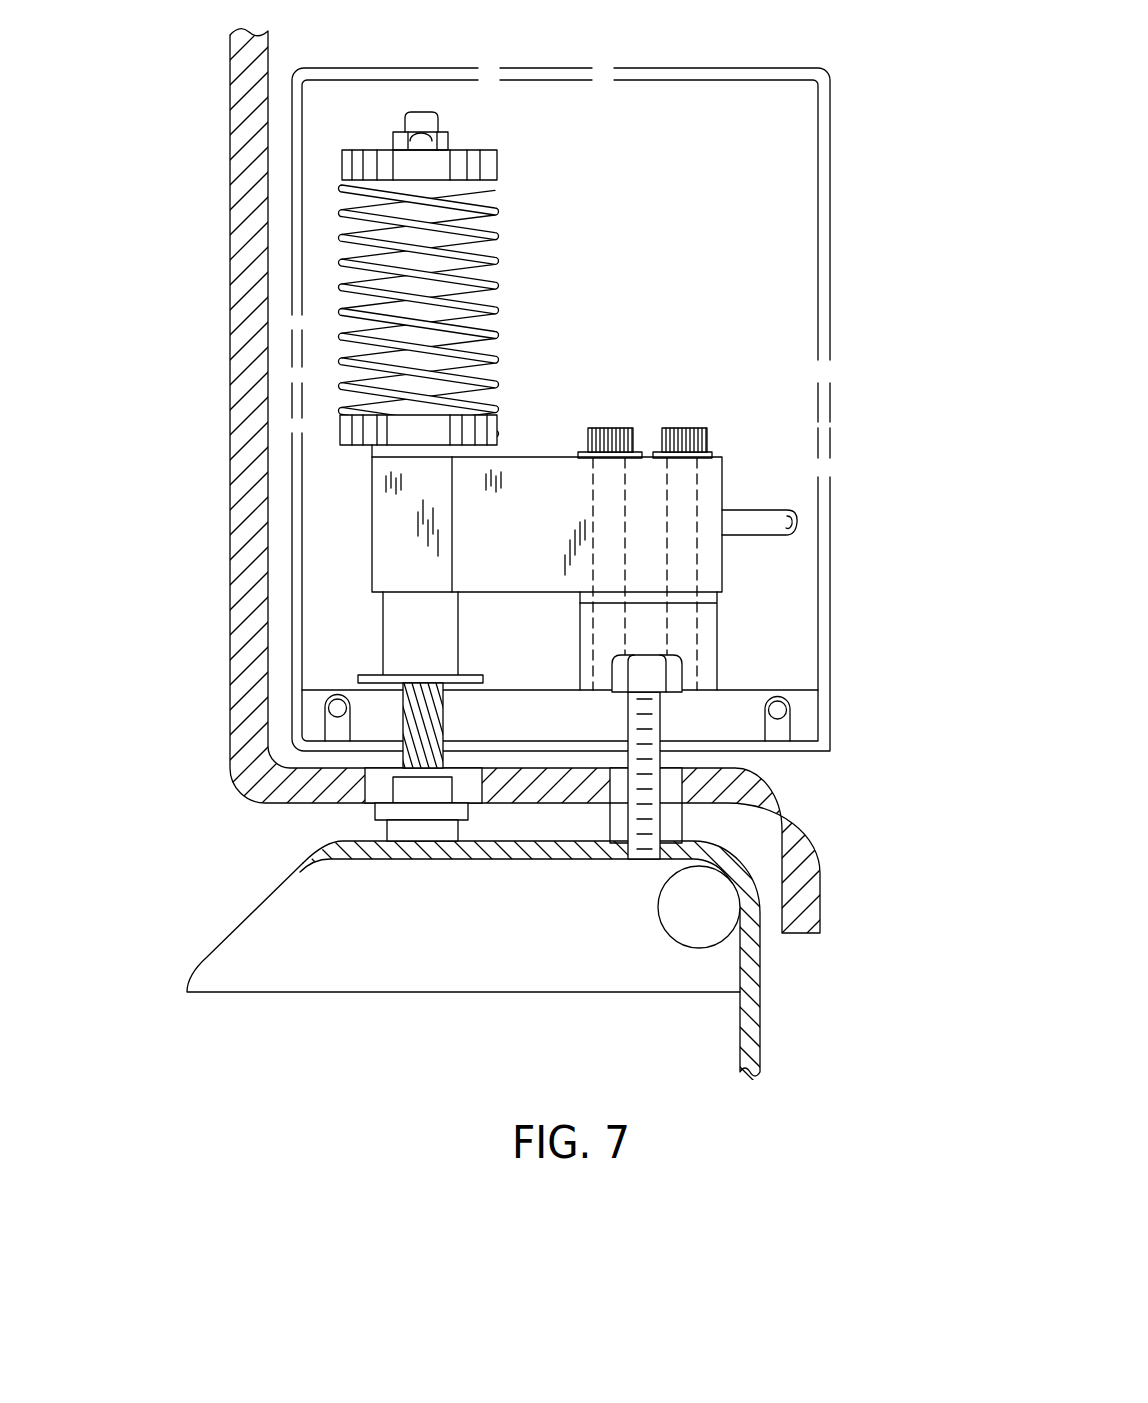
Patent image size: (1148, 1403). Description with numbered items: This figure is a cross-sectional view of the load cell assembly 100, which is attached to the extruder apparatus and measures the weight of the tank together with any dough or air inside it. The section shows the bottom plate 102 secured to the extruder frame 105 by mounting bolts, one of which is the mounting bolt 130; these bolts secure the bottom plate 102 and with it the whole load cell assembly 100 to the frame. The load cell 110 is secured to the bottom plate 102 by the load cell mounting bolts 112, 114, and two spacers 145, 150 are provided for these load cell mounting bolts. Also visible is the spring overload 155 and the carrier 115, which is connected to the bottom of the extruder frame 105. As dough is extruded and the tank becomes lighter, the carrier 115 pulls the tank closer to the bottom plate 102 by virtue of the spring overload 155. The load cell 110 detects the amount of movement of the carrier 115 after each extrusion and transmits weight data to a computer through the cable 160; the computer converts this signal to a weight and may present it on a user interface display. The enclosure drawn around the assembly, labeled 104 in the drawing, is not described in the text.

The load cell assembly 100 is at (787, 243).
The bottom plate 102 is at (708, 658).
The enclosure housing 104 is at (835, 172).
The extruder frame 105 is at (245, 480).
The load cell 110 is at (712, 560).
The load cell mounting bolt 112 is at (708, 437).
The load cell mounting bolt 114 is at (613, 428).
The carrier 115 is at (410, 723).
The mounting bolt 130 is at (652, 675).
The spacer 145 is at (653, 630).
The spacer 150 is at (740, 700).
The spring overload 155 is at (338, 310).
The cable 160 is at (770, 523).